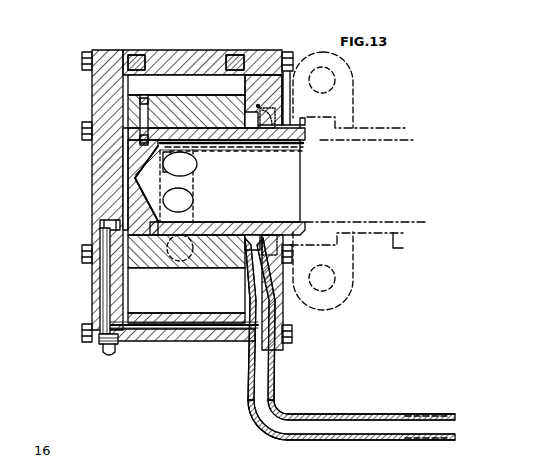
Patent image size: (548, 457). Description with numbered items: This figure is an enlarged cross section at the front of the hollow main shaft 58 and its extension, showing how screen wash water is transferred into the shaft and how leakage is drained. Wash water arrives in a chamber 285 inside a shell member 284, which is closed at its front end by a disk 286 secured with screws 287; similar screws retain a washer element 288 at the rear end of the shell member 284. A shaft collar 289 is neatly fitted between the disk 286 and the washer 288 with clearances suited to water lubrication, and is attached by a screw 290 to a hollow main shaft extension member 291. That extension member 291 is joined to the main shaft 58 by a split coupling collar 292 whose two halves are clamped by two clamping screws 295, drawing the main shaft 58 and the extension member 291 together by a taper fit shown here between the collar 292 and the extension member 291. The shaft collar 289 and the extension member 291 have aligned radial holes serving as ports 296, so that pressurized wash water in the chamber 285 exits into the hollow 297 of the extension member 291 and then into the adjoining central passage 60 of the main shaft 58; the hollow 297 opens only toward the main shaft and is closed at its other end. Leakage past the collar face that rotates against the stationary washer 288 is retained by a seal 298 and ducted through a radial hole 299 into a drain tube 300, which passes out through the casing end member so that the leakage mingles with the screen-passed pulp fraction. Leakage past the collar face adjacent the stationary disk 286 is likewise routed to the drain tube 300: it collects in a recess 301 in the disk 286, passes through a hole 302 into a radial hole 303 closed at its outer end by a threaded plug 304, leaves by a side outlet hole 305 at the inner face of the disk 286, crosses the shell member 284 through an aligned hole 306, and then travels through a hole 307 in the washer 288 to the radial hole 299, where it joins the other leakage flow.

The main shaft 58 is at (403, 248).
The central passage 60 is at (357, 181).
The shell member 284 is at (148, 50).
The chamber 285 is at (186, 290).
The disk 286 is at (91, 85).
The screws 287 is at (88, 60).
The washer element 288 is at (271, 50).
The shaft collar 289 is at (208, 95).
The screw 290 is at (140, 100).
The shaft extension member 291 is at (222, 135).
The split coupling collar 292 is at (362, 279).
The clamping screws 295 is at (337, 80).
The ports 296 is at (190, 200).
The hollow 297 is at (229, 181).
The seal 298 is at (283, 112).
The radial hole 299 is at (275, 300).
The drain tube 300 is at (305, 415).
The recess 301 is at (127, 162).
The hole 302 is at (100, 224).
The radial hole 303 is at (100, 280).
The threaded plug 304 is at (117, 356).
The side outlet hole 305 is at (100, 336).
The hole 306 is at (177, 333).
The hole 307 is at (270, 348).